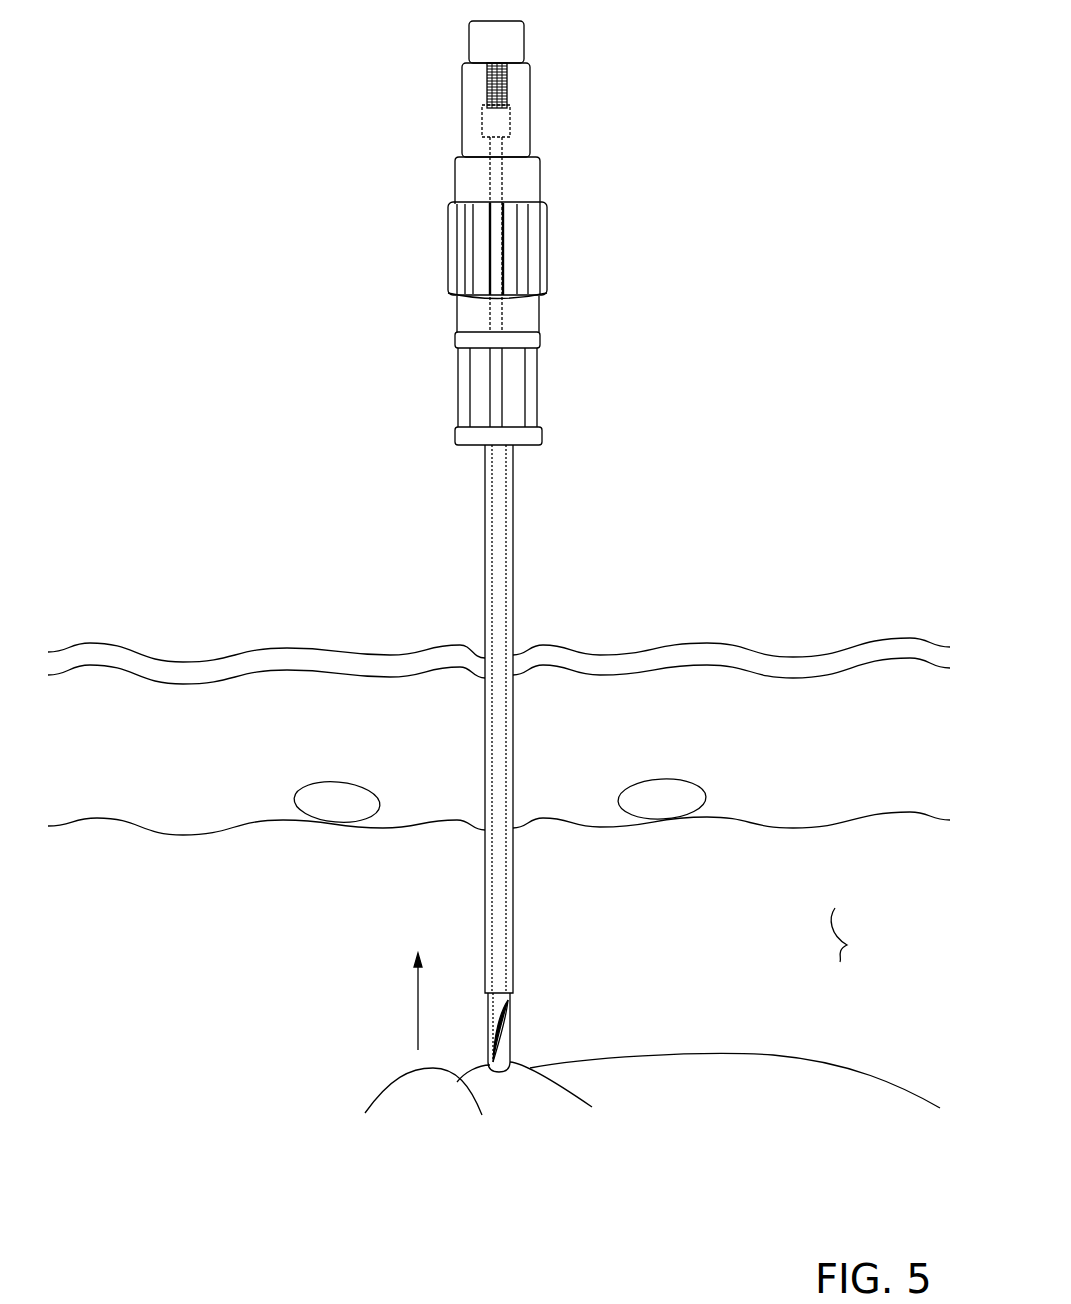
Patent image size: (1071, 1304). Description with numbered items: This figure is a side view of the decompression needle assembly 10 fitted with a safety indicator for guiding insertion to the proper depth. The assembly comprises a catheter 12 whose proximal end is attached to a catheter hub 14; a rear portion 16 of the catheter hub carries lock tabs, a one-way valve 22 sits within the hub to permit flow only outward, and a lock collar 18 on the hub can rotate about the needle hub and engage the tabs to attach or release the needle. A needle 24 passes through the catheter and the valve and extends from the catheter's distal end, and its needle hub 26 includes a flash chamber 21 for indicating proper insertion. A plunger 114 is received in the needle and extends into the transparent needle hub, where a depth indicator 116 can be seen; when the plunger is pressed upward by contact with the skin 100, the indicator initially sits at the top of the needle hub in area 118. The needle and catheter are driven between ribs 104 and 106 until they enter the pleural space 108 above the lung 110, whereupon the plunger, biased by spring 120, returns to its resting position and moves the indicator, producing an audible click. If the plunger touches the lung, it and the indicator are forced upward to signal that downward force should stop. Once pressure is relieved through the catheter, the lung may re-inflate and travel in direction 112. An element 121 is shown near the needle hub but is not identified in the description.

The decompression needle assembly 10 is at (456, 157).
The catheter 12 is at (512, 503).
The catheter hub 14 is at (517, 372).
The rear portion 16 is at (540, 248).
The lock collar 18 is at (540, 222).
The flash chamber 21 is at (470, 88).
The one-way valve 22 is at (483, 307).
The needle 24 is at (508, 993).
The needle hub 26 is at (520, 103).
The skin 100 is at (800, 662).
The rib 104 is at (672, 790).
The rib 106 is at (303, 798).
The pleural space 108 is at (847, 945).
The lung 110 is at (773, 1070).
The direction 112 is at (417, 1008).
The plunger 114 is at (502, 1035).
The depth indicator 116 is at (495, 118).
The area 118 is at (585, 33).
The spring 120 is at (487, 68).
The housing shoulder 121 is at (545, 160).